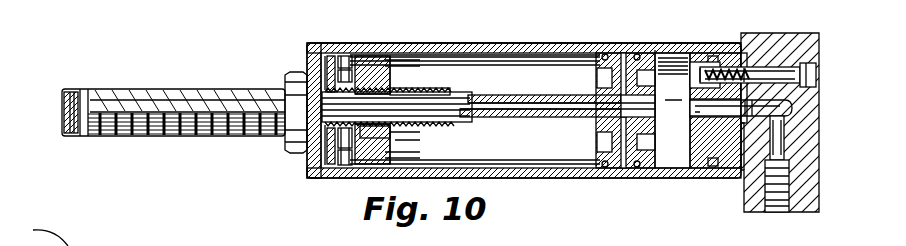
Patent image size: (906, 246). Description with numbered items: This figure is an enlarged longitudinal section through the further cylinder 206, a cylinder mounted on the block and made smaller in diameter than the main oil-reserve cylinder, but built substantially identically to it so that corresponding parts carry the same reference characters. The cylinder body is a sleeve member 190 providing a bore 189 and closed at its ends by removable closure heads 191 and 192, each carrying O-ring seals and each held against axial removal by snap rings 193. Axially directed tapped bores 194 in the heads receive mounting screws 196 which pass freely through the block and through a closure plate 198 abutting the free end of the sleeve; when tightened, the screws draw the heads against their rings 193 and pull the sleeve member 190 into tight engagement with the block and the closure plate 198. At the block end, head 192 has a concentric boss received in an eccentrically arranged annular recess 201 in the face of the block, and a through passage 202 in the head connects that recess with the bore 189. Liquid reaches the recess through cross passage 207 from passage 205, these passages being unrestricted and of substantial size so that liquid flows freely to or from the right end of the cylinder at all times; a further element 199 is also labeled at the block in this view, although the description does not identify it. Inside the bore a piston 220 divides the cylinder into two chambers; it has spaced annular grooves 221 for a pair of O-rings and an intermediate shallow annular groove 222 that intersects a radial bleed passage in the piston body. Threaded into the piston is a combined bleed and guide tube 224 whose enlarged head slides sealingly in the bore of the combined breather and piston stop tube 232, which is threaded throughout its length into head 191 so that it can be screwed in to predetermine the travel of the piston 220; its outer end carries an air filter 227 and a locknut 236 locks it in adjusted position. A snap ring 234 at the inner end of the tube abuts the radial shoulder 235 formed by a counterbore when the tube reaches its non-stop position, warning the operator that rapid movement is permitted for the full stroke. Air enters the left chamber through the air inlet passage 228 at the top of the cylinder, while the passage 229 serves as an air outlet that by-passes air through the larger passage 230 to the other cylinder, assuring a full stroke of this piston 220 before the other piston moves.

The air filter 227 is at (68, 106).
The combined breather and piston stop tube 232 is at (152, 88).
The locknut 236 is at (296, 78).
The closure plate 198 is at (311, 58).
The snap rings 193 is at (321, 46).
The air inlet passage 228 is at (350, 50).
The closure head 191 is at (378, 54).
The further cylinder 206 is at (470, 42).
The bore 189 is at (495, 52).
The sleeve member 190 is at (513, 43).
The annular grooves 221 is at (610, 53).
The intermediate shallow annular groove 222 is at (620, 52).
The tapped bores 194 is at (655, 48).
The closure head 192 is at (692, 52).
The cross passage 207 is at (782, 62).
The mounting screws 196 is at (775, 100).
The block 199 is at (801, 32).
The radial shoulder 235 is at (388, 78).
The snap ring 234 is at (400, 82).
The combined bleed and guide tube 224 is at (546, 94).
The passage 230 is at (386, 140).
The piston 220 is at (594, 143).
The passage 229 is at (352, 176).
The through passage 202 is at (692, 112).
The annular recess 201 is at (744, 178).
The passage 205 is at (766, 180).